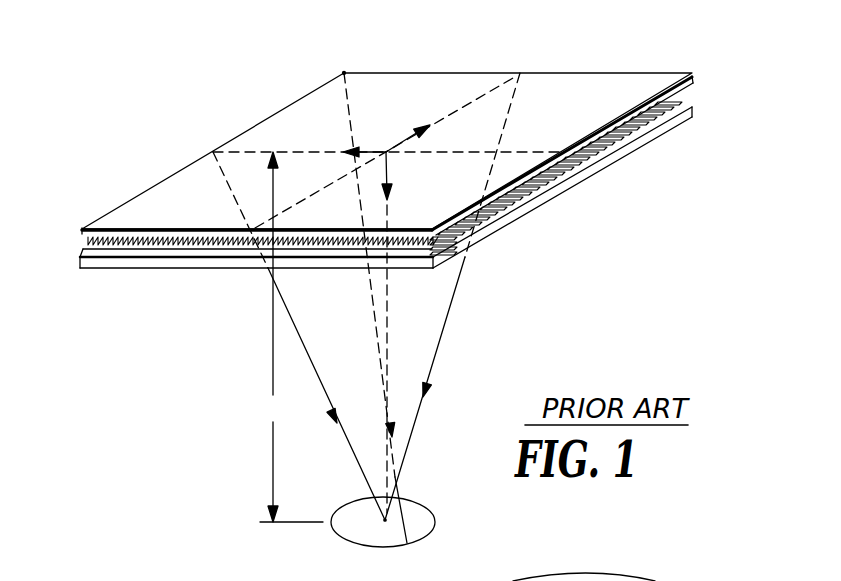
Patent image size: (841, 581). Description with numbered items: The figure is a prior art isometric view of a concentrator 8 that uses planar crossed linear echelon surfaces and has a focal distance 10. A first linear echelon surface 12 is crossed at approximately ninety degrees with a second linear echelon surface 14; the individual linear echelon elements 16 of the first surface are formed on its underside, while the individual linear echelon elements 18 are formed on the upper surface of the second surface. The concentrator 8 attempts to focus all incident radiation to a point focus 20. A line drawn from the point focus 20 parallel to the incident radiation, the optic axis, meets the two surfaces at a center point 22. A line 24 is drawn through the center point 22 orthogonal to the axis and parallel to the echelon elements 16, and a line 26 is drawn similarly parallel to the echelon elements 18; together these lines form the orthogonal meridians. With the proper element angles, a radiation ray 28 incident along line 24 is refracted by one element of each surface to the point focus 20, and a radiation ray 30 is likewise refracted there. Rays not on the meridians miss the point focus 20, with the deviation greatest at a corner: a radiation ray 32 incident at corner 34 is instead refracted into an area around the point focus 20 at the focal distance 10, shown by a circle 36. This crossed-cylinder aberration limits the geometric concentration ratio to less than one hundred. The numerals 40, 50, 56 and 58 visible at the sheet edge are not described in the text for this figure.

The concentrator 8 is at (157, 136).
The focal distance 10 is at (291, 337).
The first linear echelon surface 12 is at (638, 75).
The second linear echelon surface 14 is at (645, 143).
The individual linear echelon elements 16 is at (90, 240).
The individual linear echelon elements 18 is at (548, 193).
The point focus 20 is at (385, 520).
The center point 22 is at (385, 151).
The line 24 is at (279, 148).
The line 26 is at (480, 84).
The radiation ray 28 is at (213, 152).
The radiation ray 30 is at (520, 73).
The radiation ray 32 is at (345, 73).
The corner 34 is at (344, 73).
The circle 36 is at (432, 508).
The optical element 40 is at (721, 580).
The light beam 50 is at (550, 580).
The incident ray 56 is at (588, 580).
The focal region 58 is at (436, 569).